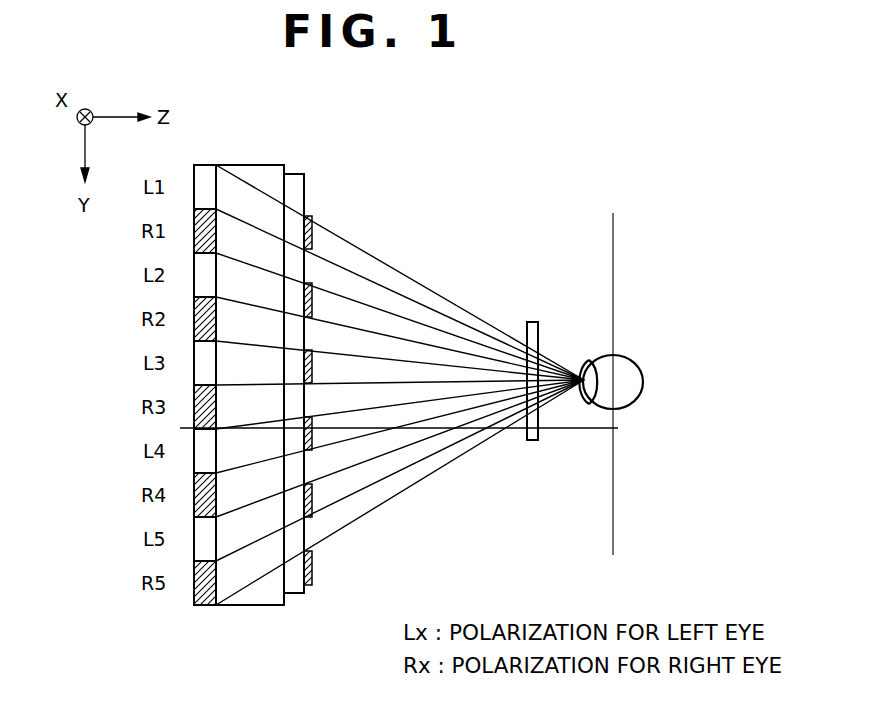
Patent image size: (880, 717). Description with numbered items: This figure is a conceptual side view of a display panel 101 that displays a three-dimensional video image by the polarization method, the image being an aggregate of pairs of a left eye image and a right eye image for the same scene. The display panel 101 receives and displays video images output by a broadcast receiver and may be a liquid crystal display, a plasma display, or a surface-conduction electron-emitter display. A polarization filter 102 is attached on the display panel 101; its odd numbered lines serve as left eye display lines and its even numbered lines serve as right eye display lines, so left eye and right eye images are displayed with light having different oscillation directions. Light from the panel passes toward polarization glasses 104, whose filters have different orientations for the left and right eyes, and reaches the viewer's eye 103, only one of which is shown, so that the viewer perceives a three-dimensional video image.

The display panel 101 is at (242, 165).
The polarization filter 102 is at (297, 594).
The eye 103 is at (631, 404).
The polarization glasses 104 is at (533, 321).